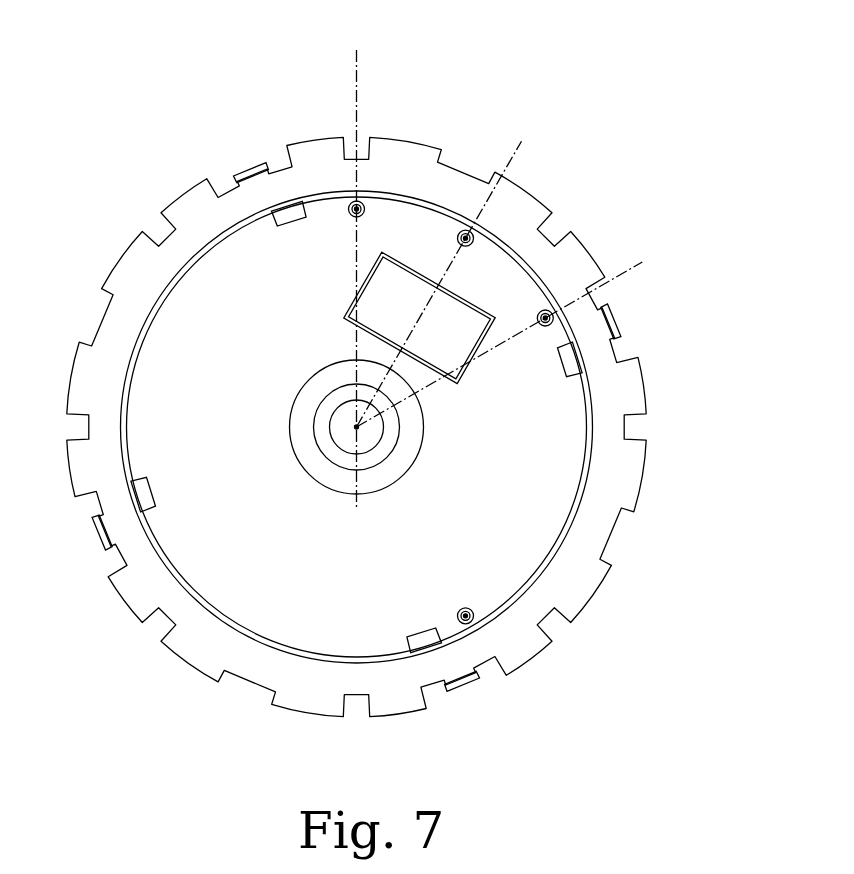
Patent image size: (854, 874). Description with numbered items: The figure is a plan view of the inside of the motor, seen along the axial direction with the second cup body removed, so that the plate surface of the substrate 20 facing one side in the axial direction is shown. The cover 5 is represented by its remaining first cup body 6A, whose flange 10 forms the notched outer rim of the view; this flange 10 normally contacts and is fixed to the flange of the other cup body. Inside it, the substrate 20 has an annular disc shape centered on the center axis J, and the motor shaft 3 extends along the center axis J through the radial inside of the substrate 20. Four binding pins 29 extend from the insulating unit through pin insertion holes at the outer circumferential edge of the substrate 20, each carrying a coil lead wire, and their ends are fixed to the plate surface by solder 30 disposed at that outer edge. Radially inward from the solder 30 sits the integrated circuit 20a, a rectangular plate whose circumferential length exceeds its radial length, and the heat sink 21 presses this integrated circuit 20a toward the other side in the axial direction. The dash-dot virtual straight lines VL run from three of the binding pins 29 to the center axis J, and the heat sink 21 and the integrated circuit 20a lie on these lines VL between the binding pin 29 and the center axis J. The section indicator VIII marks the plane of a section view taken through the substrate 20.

The motor shaft 3 is at (335, 452).
The cover 5 is at (660, 350).
The first cup body 6A is at (656, 375).
The flange 10 is at (637, 463).
The substrate 20 is at (234, 273).
The integrated circuit 20a is at (452, 318).
The heat sink 21 is at (465, 297).
The binding pin 29 is at (359, 202).
The solder 30 is at (363, 205).
The virtual straight line VL is at (700, 247).
The center axis J is at (356, 427).
The section line VIII is at (356, 103).